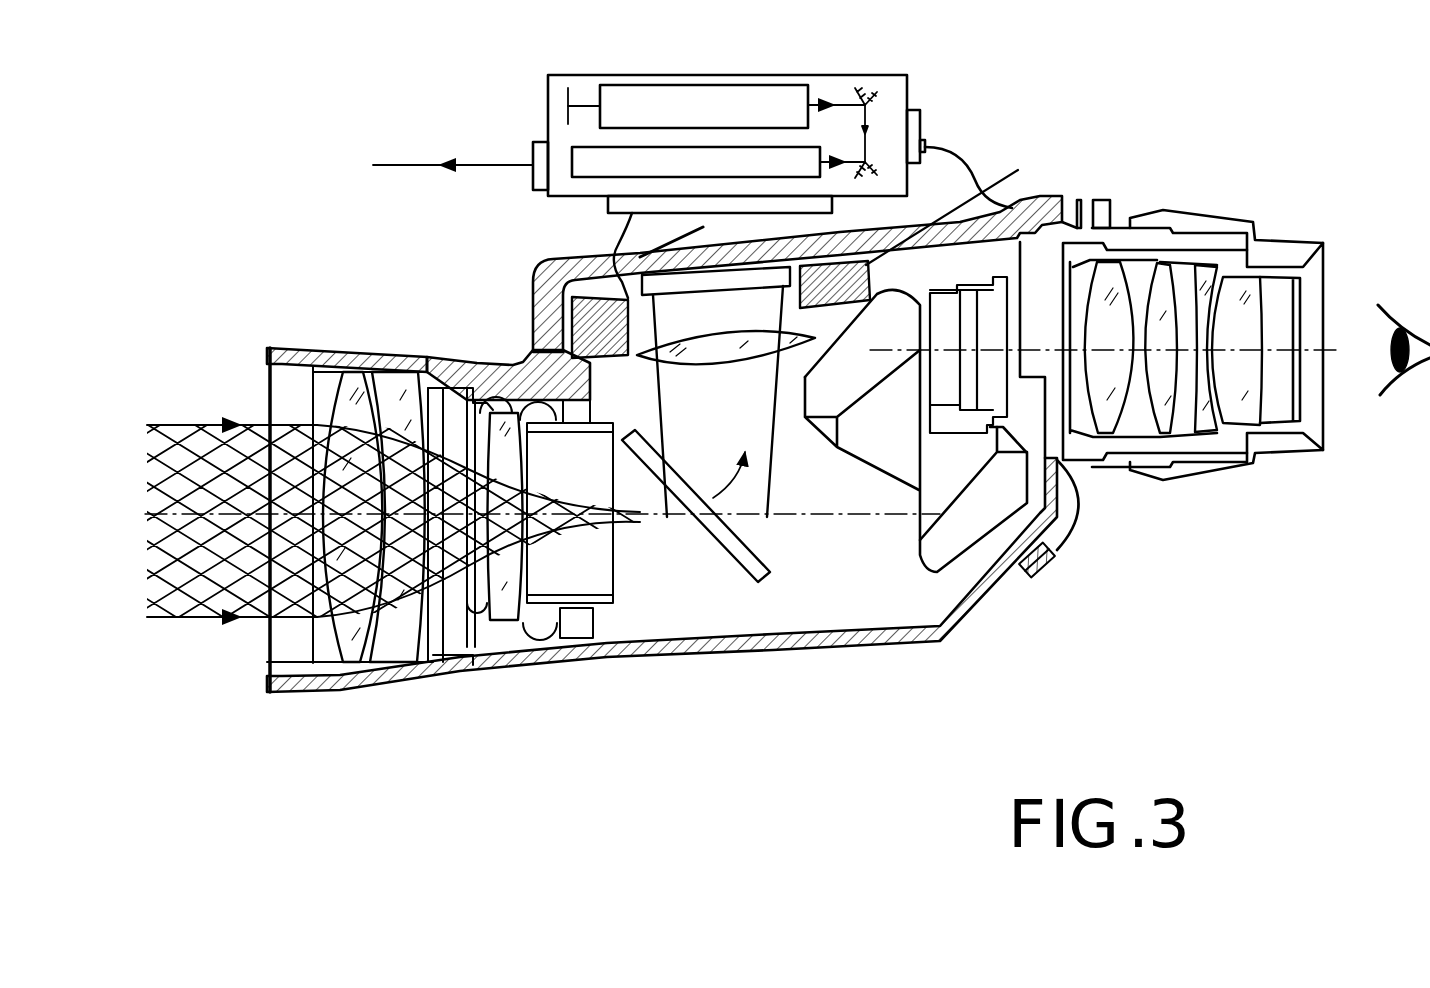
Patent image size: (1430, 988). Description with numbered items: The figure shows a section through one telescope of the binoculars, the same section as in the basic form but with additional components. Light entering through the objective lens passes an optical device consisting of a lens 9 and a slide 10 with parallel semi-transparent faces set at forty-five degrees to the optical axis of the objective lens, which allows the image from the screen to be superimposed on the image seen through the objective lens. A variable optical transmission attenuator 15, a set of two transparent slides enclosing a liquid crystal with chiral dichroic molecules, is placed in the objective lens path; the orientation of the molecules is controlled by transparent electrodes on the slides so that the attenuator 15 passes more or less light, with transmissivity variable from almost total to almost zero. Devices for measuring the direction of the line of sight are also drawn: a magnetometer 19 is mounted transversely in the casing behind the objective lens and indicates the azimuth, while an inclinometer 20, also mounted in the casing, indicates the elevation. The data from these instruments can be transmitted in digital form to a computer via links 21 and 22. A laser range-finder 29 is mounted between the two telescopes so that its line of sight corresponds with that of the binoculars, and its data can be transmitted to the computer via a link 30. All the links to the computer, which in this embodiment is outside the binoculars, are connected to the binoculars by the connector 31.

The lens 9 is at (730, 362).
The slide 10 is at (683, 487).
The variable optical transmission attenuator 15 is at (472, 668).
The magnetometer 19 is at (583, 328).
The inclinometer 20 is at (858, 262).
The link 21 is at (627, 225).
The link 22 is at (1003, 140).
The laser range-finder 29 is at (834, 92).
The link 30 is at (950, 146).
The connector 31 is at (1062, 550).